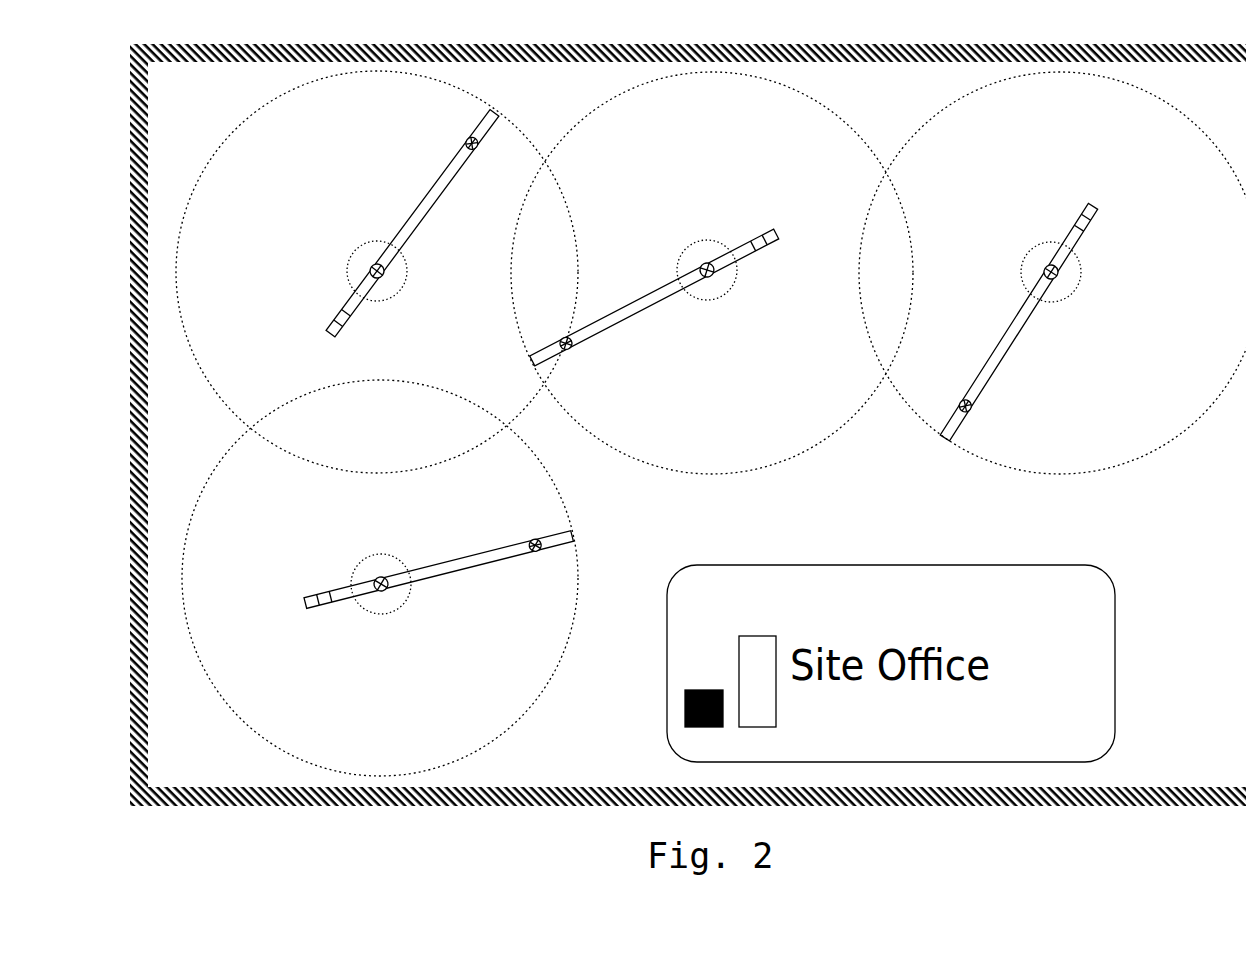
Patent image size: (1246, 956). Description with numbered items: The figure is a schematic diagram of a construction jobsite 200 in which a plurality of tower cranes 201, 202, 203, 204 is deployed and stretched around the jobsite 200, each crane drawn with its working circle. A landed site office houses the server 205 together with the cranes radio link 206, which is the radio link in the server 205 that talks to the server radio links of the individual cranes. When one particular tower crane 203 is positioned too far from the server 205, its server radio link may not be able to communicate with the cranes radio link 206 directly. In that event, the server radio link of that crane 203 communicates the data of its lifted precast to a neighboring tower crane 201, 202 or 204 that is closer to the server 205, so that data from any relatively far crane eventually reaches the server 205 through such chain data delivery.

The construction jobsite 200 is at (1170, 24).
The tower crane 201 is at (1058, 278).
The tower crane 202 is at (703, 262).
The tower crane 203 is at (362, 262).
The tower crane 204 is at (380, 603).
The server 205 is at (757, 657).
The cranes radio link 206 is at (683, 705).